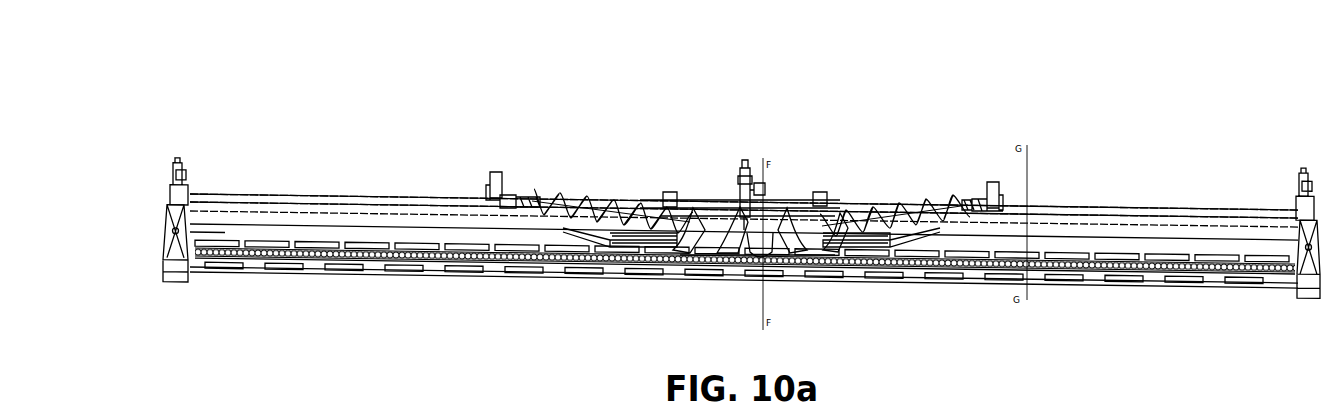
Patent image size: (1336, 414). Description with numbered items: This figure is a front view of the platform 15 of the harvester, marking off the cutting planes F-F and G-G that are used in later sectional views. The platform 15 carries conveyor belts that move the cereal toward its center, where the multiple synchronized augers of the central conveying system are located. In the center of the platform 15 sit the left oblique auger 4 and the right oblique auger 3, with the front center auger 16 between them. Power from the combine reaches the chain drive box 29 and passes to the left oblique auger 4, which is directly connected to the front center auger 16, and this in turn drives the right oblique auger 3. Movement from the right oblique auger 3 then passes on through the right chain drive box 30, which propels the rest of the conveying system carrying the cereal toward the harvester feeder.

The platform 15 is at (361, 203).
The right chain drive box 30 is at (497, 186).
The right oblique auger 3 is at (553, 200).
The front center auger 16 is at (733, 200).
The left oblique auger 4 is at (878, 214).
The chain drive box 29 is at (993, 185).